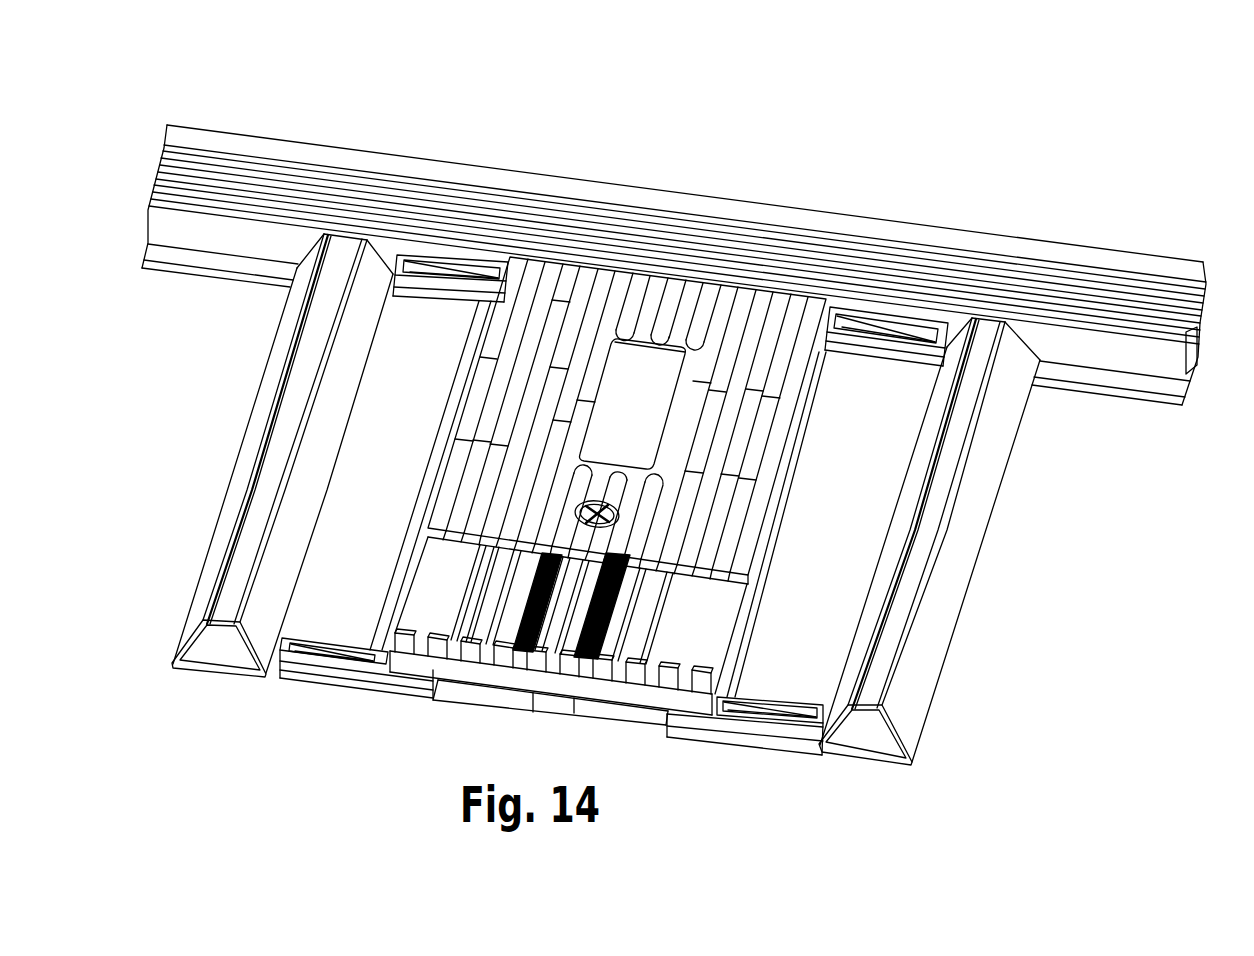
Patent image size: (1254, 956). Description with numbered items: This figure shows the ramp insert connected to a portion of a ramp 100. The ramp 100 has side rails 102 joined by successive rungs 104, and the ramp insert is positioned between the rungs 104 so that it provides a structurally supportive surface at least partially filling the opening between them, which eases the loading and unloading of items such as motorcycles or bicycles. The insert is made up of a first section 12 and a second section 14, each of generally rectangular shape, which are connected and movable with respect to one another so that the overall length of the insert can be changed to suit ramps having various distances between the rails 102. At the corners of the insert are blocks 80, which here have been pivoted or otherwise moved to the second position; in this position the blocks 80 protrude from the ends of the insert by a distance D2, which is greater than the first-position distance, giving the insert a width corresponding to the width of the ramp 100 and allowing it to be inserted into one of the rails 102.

The ramp 100 is at (673, 435).
The rail 102 is at (443, 220).
The rung 104 is at (300, 412).
The first section 12 is at (816, 430).
The second section 14 is at (748, 629).
The block 80 is at (893, 335).
The distance D2 is at (383, 698).